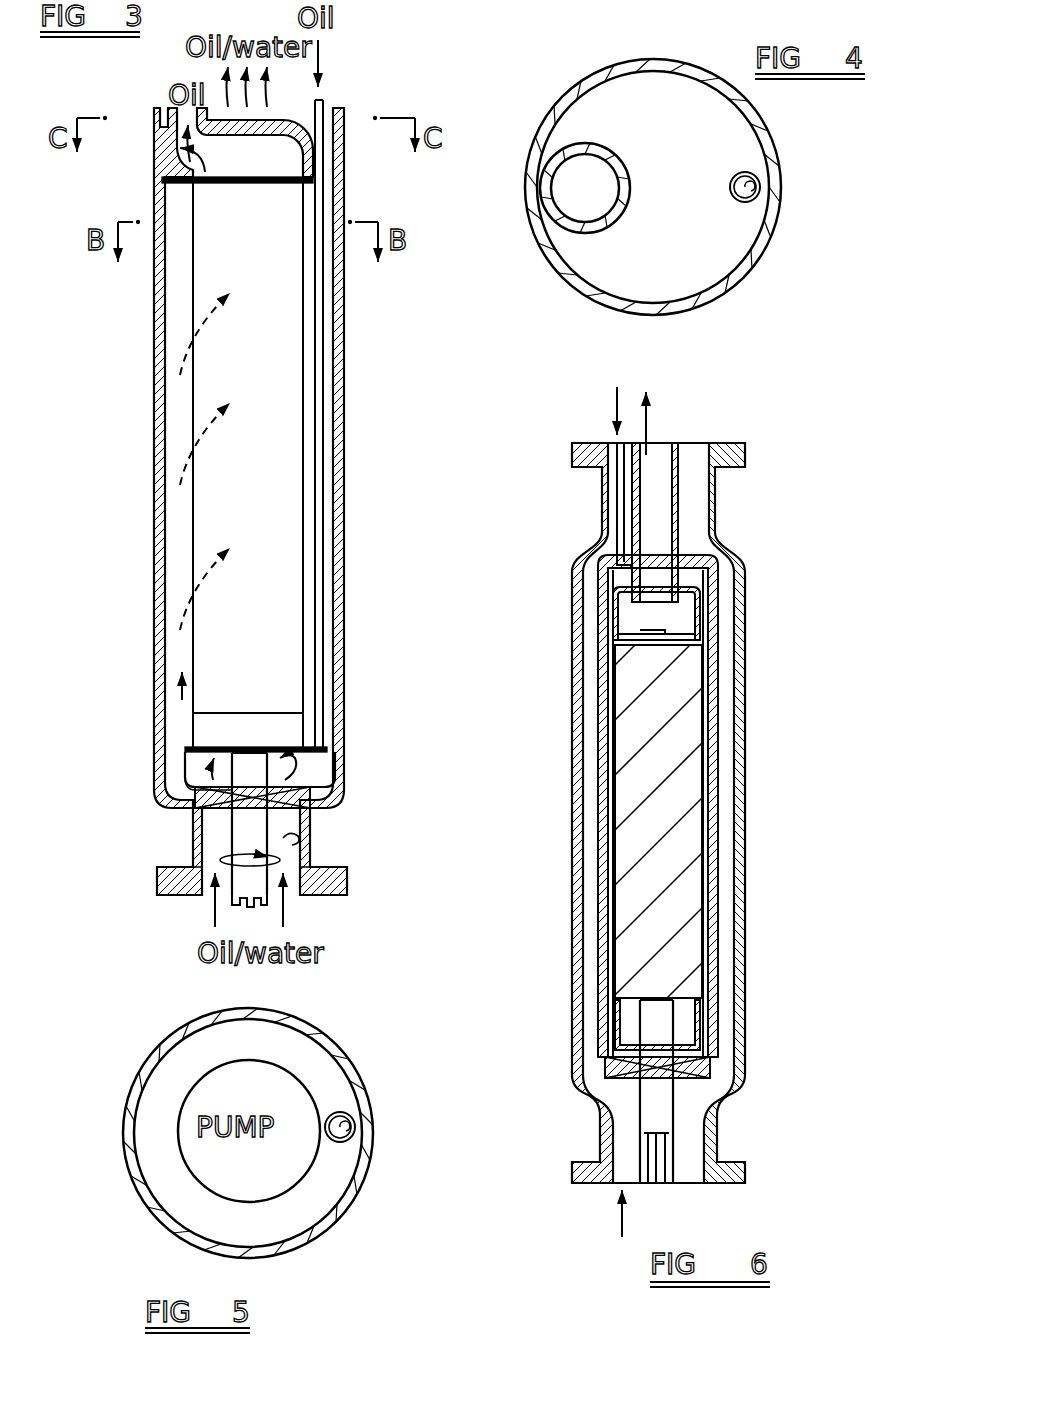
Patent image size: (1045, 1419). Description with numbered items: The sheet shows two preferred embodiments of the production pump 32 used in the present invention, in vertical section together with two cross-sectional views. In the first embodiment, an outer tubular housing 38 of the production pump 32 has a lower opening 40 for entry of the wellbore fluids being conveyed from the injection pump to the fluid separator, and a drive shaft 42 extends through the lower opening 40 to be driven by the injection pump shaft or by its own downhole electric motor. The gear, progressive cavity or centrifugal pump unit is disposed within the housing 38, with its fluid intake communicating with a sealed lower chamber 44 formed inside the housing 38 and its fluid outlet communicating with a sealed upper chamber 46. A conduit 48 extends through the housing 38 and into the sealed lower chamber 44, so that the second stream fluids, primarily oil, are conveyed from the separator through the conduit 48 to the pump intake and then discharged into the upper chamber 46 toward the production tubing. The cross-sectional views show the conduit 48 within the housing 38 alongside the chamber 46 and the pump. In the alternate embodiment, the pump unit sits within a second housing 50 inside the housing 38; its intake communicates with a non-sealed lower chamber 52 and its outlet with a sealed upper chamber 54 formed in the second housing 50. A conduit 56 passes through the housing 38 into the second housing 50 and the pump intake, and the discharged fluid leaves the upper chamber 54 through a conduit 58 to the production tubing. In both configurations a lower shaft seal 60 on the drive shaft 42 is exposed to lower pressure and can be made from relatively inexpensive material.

In FIG. 3, the production pump 32 is at (385, 432).
In FIG. 4, the production pump 32 is at (788, 141).
In FIG. 5, the production pump 32 is at (375, 1080).
In FIG. 3, the outer tubular housing 38 is at (345, 597).
In FIG. 4, the outer tubular housing 38 is at (707, 297).
In FIG. 5, the outer tubular housing 38 is at (300, 1240).
In FIG. 6, the outer tubular housing 38 is at (745, 633).
In FIG. 3, the lower opening 40 is at (303, 847).
In FIG. 6, the lower opening 40 is at (688, 1174).
In FIG. 3, the drive shaft 42 is at (245, 832).
In FIG. 6, the drive shaft 42 is at (667, 1110).
In FIG. 3, the sealed lower chamber 44 is at (343, 793).
In FIG. 3, the sealed upper chamber 46 is at (190, 178).
In FIG. 4, the sealed upper chamber 46 is at (552, 190).
In FIG. 3, the conduit 48 is at (322, 104).
In FIG. 4, the conduit 48 is at (760, 192).
In FIG. 5, the conduit 48 is at (350, 1133).
In FIG. 6, the second housing 50 is at (722, 700).
In FIG. 6, the non-sealed lower chamber 52 is at (700, 1030).
In FIG. 6, the sealed upper chamber 54 is at (690, 612).
In FIG. 6, the conduit 56 is at (623, 503).
In FIG. 6, the conduit 58 is at (667, 470).
In FIG. 3, the lower shaft seal 60 is at (230, 795).
In FIG. 6, the lower shaft seal 60 is at (712, 1065).